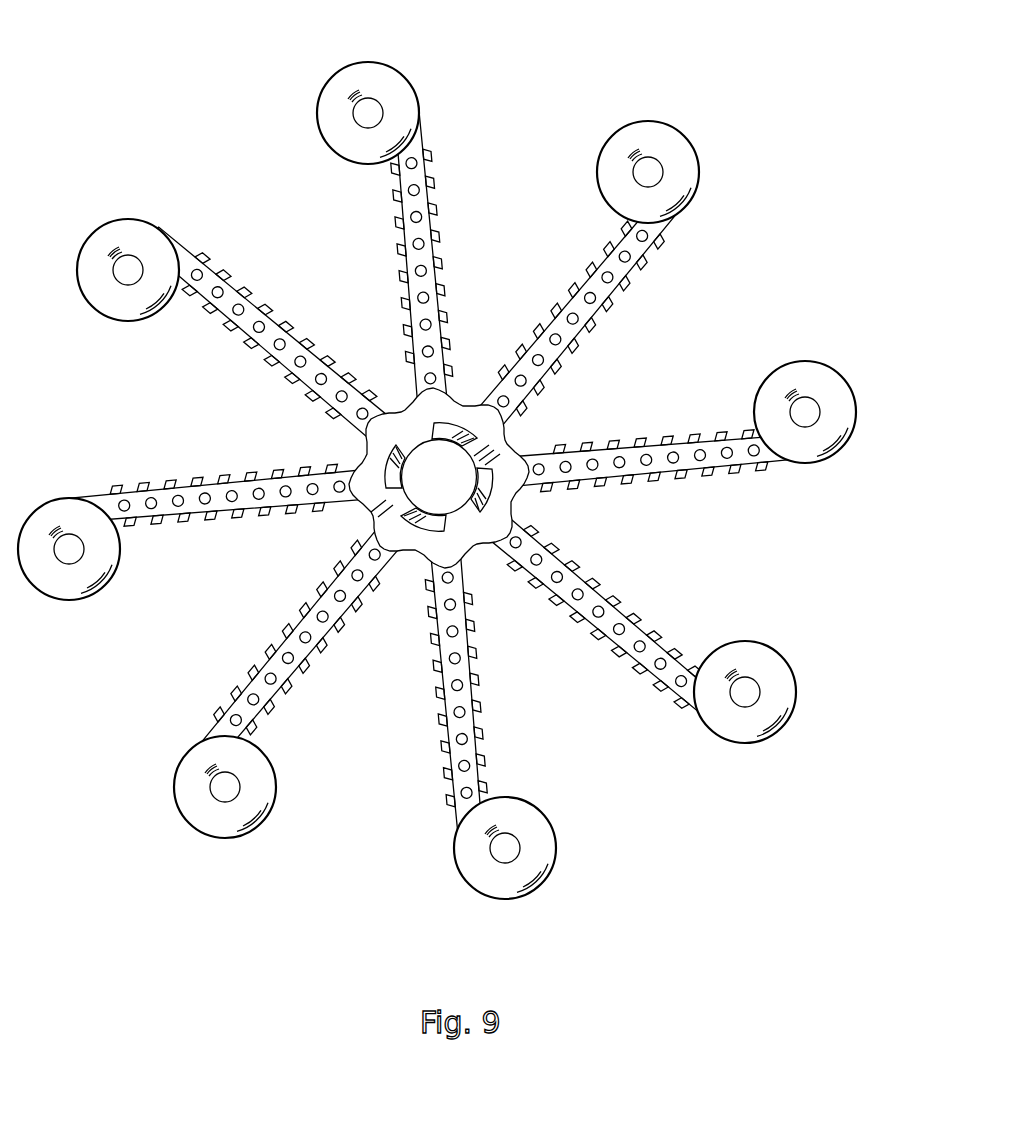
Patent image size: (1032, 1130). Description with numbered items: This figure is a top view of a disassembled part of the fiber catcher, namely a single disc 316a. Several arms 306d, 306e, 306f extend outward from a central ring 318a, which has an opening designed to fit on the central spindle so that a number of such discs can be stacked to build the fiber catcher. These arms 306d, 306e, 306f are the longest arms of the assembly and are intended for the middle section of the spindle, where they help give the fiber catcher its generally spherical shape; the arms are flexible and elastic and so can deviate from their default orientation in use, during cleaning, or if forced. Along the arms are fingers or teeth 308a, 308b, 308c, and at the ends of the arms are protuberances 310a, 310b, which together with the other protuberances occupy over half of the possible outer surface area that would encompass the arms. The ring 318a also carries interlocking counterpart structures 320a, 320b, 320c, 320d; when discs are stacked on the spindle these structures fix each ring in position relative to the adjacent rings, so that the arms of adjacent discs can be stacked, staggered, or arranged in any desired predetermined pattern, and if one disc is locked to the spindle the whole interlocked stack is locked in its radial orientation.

The disc 316a is at (478, 457).
The protuberance 310a is at (693, 142).
The protuberance 310b is at (823, 366).
The arm 306d is at (643, 263).
The arm 306e is at (755, 455).
The arm 306f is at (610, 645).
The tooth 308a is at (680, 707).
The tooth 308b is at (662, 694).
The tooth 308c is at (640, 676).
The ring 318a is at (421, 473).
The interlocking counterpart structure 320a is at (400, 459).
The interlocking counterpart structure 320b is at (452, 432).
The interlocking counterpart structure 320c is at (488, 492).
The interlocking counterpart structure 320d is at (417, 533).